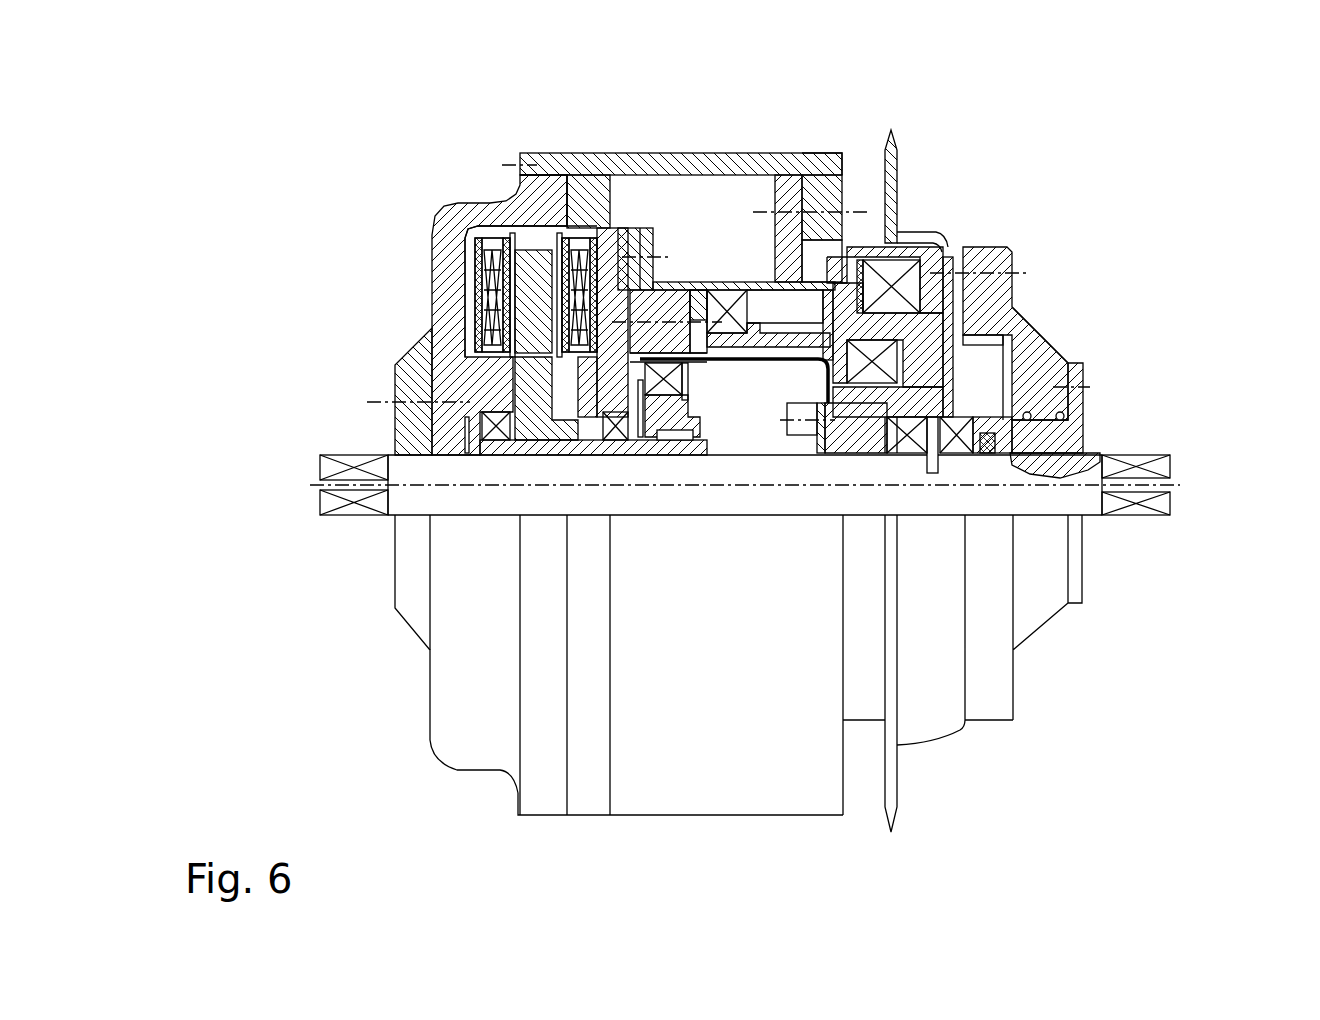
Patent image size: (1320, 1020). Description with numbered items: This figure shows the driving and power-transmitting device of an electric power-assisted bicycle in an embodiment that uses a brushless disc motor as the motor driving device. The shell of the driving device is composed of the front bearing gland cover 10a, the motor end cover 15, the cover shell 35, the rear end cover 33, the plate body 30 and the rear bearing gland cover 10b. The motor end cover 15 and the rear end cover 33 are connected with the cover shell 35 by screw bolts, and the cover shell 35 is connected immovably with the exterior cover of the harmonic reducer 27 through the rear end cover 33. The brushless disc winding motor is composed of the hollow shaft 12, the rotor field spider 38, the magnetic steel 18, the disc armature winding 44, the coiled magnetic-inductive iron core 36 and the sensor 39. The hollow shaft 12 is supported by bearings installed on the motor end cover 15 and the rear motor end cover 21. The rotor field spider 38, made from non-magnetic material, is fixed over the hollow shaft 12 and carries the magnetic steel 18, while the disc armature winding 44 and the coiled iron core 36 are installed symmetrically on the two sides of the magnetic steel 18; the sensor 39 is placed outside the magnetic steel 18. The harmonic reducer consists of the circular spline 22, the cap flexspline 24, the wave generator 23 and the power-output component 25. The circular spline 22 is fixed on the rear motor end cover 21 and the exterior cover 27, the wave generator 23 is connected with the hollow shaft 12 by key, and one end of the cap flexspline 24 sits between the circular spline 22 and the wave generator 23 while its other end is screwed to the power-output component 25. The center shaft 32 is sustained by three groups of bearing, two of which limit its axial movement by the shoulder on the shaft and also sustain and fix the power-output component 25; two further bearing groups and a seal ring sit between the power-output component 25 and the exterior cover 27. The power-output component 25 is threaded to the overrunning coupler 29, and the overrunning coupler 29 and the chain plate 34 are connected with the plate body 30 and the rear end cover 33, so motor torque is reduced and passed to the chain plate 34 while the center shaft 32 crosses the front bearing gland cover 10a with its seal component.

The front bearing gland cover 10a is at (418, 350).
The rear bearing gland cover 10b is at (1055, 372).
The hollow shaft 12 is at (485, 440).
The motor end cover 15 is at (447, 383).
The magnetic steel 18 is at (488, 222).
The rear motor end cover 21 is at (530, 164).
The circular spline 22 is at (637, 240).
The wave generator 23 is at (606, 252).
The cap flexspline 24 is at (643, 303).
The power-output component 25 is at (775, 337).
The exterior cover of the harmonic reducer 27 is at (787, 232).
The overrunning coupler 29 is at (970, 345).
The plate body 30 is at (1027, 343).
The center shaft 32 is at (325, 470).
The rear end cover 33 is at (833, 187).
The chain plate 34 is at (898, 160).
The cover shell 35 is at (808, 188).
The coiled magnetic-inductive iron core 36 is at (548, 198).
The rotor field spider 38 is at (565, 240).
The sensor 39 is at (480, 294).
The disc armature winding 44 is at (528, 330).